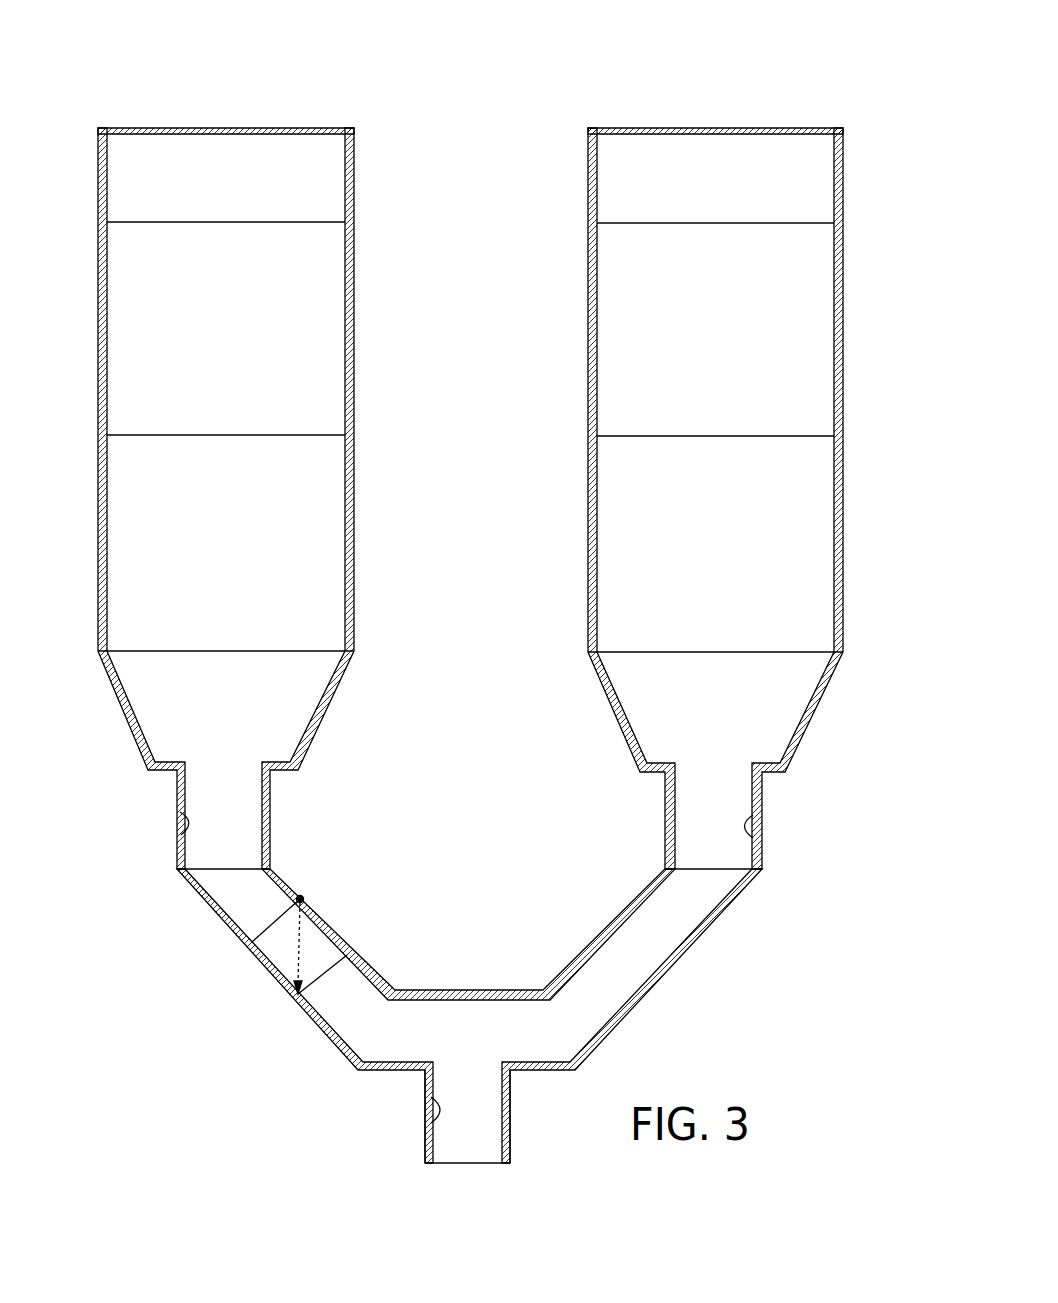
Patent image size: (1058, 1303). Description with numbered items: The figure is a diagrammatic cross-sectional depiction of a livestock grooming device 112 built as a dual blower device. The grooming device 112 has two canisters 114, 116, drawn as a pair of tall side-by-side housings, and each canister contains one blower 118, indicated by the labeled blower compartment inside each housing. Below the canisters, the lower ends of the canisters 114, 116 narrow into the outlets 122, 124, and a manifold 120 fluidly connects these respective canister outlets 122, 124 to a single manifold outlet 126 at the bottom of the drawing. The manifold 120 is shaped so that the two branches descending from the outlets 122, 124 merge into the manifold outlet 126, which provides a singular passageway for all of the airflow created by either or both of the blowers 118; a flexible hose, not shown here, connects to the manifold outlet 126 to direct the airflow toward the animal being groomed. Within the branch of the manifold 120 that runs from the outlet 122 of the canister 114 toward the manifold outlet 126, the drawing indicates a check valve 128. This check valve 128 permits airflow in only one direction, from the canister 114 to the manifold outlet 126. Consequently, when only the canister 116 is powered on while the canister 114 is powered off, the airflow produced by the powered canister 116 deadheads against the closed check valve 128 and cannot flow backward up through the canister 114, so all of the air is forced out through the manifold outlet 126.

The grooming device 112 is at (300, 78).
The canister 114 is at (98, 183).
The canister 116 is at (843, 180).
The blower 118 is at (122, 272).
The manifold 120 is at (263, 1023).
The outlet 122 is at (177, 838).
The outlet 124 is at (758, 842).
The manifold outlet 126 is at (427, 1123).
The check valve 128 is at (325, 923).